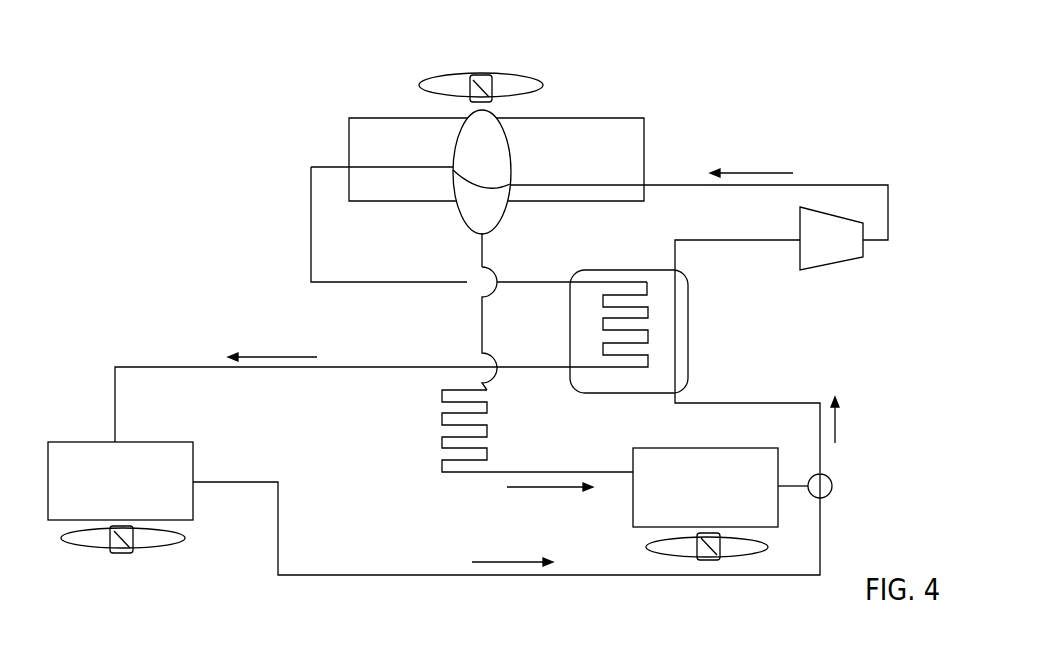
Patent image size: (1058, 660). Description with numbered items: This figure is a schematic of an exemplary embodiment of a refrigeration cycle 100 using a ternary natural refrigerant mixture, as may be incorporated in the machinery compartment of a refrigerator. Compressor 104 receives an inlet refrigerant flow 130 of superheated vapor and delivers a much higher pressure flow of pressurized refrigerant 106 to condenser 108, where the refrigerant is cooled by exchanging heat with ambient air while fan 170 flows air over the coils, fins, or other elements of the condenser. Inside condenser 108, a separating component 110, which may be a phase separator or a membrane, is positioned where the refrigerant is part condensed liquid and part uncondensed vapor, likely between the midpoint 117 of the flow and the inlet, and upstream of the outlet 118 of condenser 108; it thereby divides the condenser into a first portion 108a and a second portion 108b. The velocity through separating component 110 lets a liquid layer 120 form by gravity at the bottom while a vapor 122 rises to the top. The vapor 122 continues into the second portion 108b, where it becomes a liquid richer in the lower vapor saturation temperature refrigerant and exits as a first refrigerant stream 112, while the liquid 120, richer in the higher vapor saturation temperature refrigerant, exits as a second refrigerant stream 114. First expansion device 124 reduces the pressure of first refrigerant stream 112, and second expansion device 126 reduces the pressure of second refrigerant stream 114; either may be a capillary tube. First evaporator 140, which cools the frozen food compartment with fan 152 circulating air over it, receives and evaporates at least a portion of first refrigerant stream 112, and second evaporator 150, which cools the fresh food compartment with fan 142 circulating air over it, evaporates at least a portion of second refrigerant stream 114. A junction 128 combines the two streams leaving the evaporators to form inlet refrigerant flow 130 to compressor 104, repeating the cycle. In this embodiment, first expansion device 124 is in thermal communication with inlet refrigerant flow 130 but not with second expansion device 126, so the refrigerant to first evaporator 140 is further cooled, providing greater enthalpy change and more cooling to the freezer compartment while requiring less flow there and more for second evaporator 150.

The refrigeration cycle 100 is at (757, 97).
The compressor 104 is at (830, 266).
The flow of pressurized refrigerant 106 is at (888, 210).
The condenser 108 is at (528, 158).
The first portion of condenser 108a is at (647, 127).
The second portion of condenser 108b is at (360, 201).
The separating component 110 is at (505, 176).
The first refrigerant stream 112 is at (372, 282).
The second refrigerant stream 114 is at (483, 328).
The midpoint 117 is at (510, 213).
The outlet of condenser 118 is at (648, 185).
The liquid layer 120 is at (465, 219).
The vapor 122 is at (688, 333).
The first expansion device 124 is at (632, 365).
The second expansion device 126 is at (487, 432).
The junction 128 is at (833, 487).
The inlet refrigerant flow 130 is at (757, 241).
The first evaporator 140 is at (193, 460).
The fan 142 is at (647, 545).
The second evaporator 150 is at (747, 455).
The fan 152 is at (177, 535).
The fan 170 is at (515, 82).